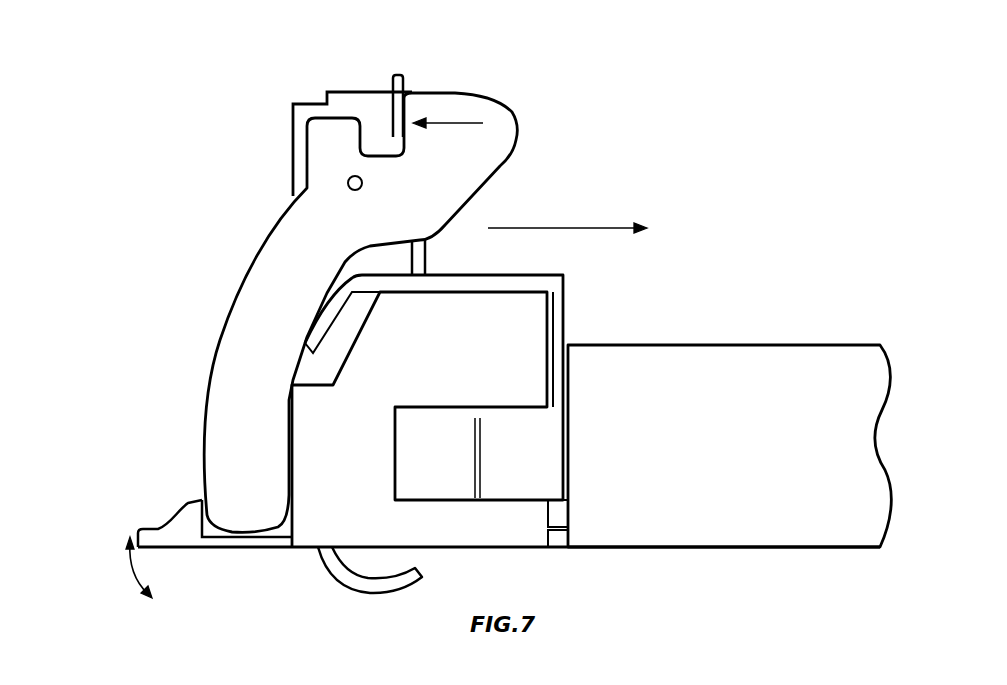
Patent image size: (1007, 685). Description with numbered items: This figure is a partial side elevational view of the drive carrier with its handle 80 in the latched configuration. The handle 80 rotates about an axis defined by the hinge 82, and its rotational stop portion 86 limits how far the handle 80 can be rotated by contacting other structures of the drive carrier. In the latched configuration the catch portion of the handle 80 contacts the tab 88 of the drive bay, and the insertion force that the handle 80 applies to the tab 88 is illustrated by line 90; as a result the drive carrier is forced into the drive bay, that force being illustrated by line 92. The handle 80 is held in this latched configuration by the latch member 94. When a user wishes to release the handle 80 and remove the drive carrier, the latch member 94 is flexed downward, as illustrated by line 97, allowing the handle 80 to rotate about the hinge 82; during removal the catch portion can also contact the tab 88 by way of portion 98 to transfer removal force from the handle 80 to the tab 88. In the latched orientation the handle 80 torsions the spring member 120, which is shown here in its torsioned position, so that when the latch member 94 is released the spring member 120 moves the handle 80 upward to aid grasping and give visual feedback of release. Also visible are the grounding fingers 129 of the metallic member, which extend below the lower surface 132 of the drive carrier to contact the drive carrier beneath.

The handle 80 is at (240, 322).
The hinge 82 is at (353, 192).
The rotational stop portion 86 is at (375, 132).
The tab 88 is at (405, 82).
The insertion force line 90 is at (437, 127).
The drive carrier force line 92 is at (575, 227).
The latch member 94 is at (164, 504).
The latch flexing line 97 is at (129, 578).
The portion of the catch portion 98 is at (358, 136).
The spring member 120 is at (335, 320).
The grounding fingers 129 is at (360, 590).
The lower surface 132 is at (250, 547).